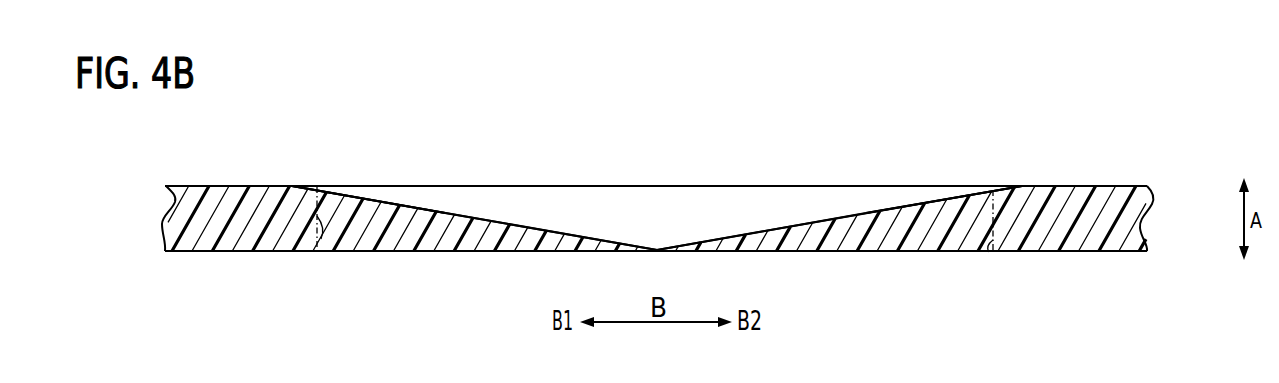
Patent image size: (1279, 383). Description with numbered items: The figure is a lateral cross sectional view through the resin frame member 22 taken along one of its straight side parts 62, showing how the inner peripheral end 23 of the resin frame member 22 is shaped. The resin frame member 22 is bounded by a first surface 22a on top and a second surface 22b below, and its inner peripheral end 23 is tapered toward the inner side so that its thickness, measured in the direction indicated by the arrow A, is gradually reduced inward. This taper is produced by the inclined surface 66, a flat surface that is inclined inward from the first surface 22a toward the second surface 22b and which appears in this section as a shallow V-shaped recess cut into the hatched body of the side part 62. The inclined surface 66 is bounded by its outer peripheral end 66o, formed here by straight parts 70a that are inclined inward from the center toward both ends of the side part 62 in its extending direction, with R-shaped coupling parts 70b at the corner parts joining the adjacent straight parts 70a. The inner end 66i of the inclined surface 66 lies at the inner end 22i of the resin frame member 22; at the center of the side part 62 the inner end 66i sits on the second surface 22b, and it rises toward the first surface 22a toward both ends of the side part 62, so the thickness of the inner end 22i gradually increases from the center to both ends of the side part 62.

The resin frame member 22 is at (401, 89).
The first surface 22a is at (1120, 186).
The second surface 22b is at (1084, 252).
The inner end of the resin frame member 22i is at (322, 250).
The inner peripheral end 23 is at (1083, 150).
The side part 62 is at (467, 243).
The inclined surface 66 is at (638, 205).
The inner end of the inclined surface 66i is at (445, 213).
The outer peripheral end of the inclined surface 66o is at (672, 158).
The straight part 70a is at (708, 186).
The coupling part 70b is at (346, 186).